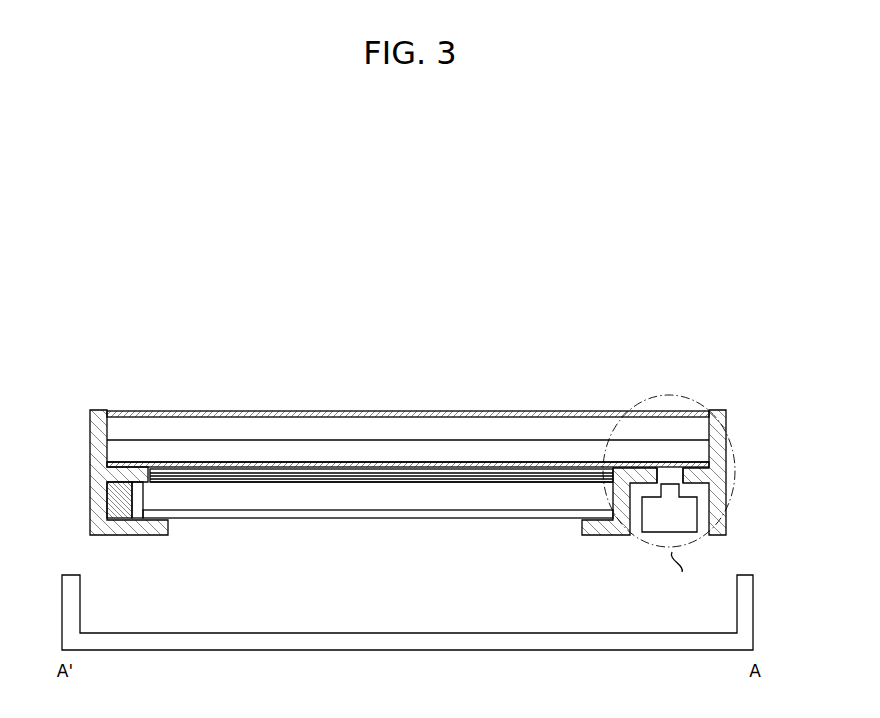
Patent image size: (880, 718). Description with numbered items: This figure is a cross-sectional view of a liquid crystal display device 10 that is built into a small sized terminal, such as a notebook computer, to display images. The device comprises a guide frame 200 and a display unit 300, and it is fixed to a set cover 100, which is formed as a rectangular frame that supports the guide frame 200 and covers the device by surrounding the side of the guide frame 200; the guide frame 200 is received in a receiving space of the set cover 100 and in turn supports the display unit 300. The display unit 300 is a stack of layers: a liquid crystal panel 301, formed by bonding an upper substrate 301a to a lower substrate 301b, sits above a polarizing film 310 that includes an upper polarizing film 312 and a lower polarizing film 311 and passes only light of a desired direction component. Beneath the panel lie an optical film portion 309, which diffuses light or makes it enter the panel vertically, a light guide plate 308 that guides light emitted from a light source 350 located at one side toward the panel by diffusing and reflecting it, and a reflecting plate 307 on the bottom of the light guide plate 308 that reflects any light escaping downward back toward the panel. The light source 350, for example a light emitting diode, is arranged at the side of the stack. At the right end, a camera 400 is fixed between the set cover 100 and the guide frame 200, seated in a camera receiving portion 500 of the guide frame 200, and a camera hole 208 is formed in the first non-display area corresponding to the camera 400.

The liquid crystal display device 10 is at (414, 399).
The set cover 100 is at (405, 650).
The guide frame 200 is at (97, 436).
The camera hole 208 is at (670, 474).
The display unit 300 is at (408, 401).
The liquid crystal panel 301 is at (408, 394).
The upper substrate 301a is at (272, 427).
The lower substrate 301b is at (207, 448).
The reflecting plate 307 is at (332, 515).
The light guide plate 308 is at (390, 497).
The optical film portion 309 is at (443, 472).
The polarizing film 310 is at (408, 396).
The lower polarizing film 311 is at (513, 462).
The upper polarizing film 312 is at (576, 408).
The light source 350 is at (127, 500).
The camera 400 is at (690, 512).
The camera receiving portion 500 is at (636, 521).